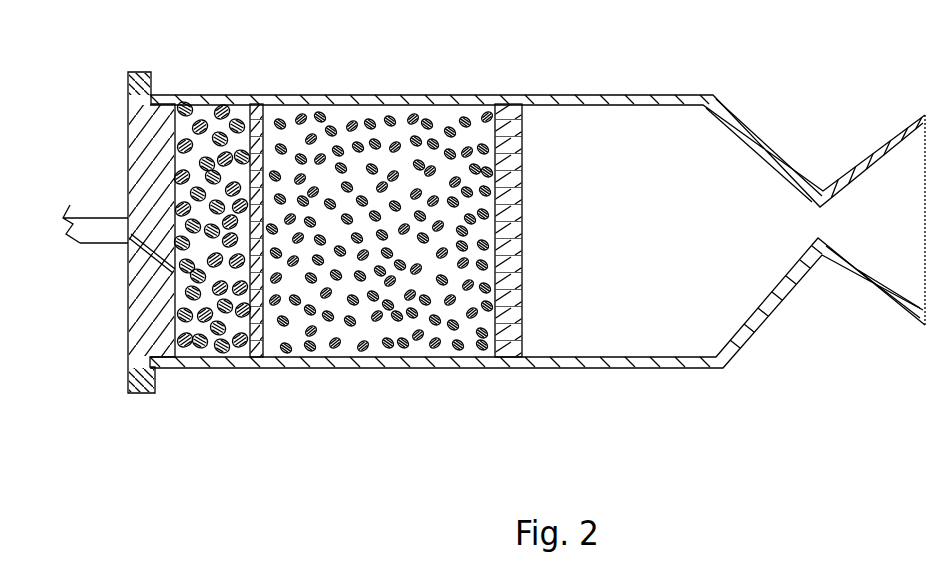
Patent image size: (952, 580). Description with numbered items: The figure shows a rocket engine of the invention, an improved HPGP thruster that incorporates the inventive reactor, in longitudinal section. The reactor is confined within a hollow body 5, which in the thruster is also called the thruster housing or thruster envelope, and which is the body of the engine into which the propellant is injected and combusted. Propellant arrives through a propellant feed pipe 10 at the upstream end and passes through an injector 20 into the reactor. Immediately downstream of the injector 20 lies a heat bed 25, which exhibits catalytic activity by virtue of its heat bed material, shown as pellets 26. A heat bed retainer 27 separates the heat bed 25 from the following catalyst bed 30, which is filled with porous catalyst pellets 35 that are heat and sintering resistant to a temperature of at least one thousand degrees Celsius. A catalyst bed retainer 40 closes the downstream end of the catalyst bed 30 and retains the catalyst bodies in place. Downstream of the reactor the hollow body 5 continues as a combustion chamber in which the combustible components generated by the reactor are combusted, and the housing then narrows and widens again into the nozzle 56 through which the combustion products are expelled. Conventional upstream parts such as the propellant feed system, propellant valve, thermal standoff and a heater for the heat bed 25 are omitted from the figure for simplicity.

The hollow body 5 is at (347, 368).
The propellant feed pipe 10 is at (103, 231).
The injector 20 is at (143, 152).
The heat bed 25 is at (204, 352).
The pellets 26 is at (213, 105).
The heat bed retainer 27 is at (255, 104).
The catalyst bed 30 is at (455, 103).
The catalyst pellets 35 is at (372, 118).
The catalyst bed retainer 40 is at (527, 283).
The nozzle 56 is at (675, 135).